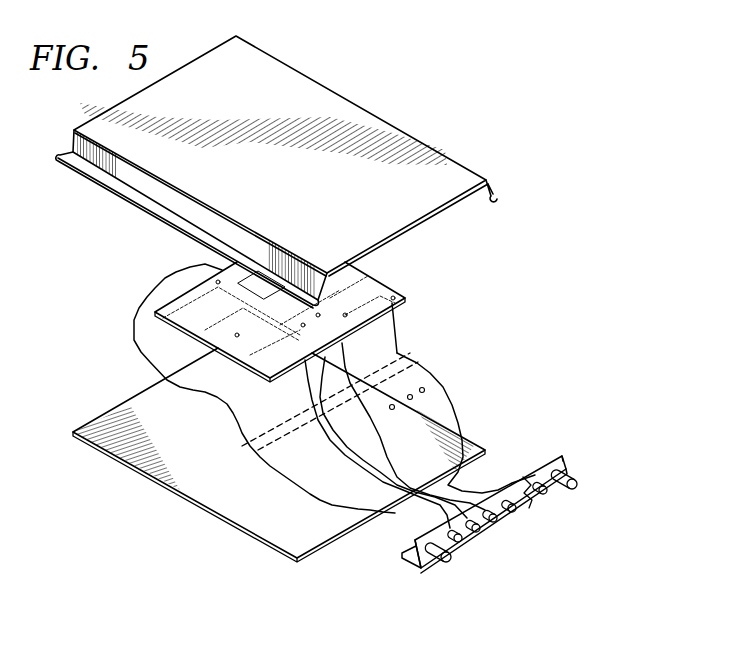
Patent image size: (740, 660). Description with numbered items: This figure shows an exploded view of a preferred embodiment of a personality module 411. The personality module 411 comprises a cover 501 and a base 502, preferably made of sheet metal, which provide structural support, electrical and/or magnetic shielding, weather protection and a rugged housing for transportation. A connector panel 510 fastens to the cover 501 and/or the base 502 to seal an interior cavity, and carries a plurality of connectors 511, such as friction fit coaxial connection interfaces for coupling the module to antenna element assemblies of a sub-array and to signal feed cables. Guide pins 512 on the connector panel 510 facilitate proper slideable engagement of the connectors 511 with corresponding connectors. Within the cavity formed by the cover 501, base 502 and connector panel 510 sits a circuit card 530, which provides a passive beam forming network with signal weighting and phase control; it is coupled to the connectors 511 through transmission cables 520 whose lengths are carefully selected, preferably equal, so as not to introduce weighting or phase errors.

The personality module 411 is at (505, 157).
The cover 501 is at (317, 84).
The base 502 is at (132, 403).
The connector panel 510 is at (557, 490).
The connectors 511 is at (498, 523).
The guide pins 512 is at (448, 558).
The transmission cables 520 is at (398, 355).
The circuit card 530 is at (380, 286).